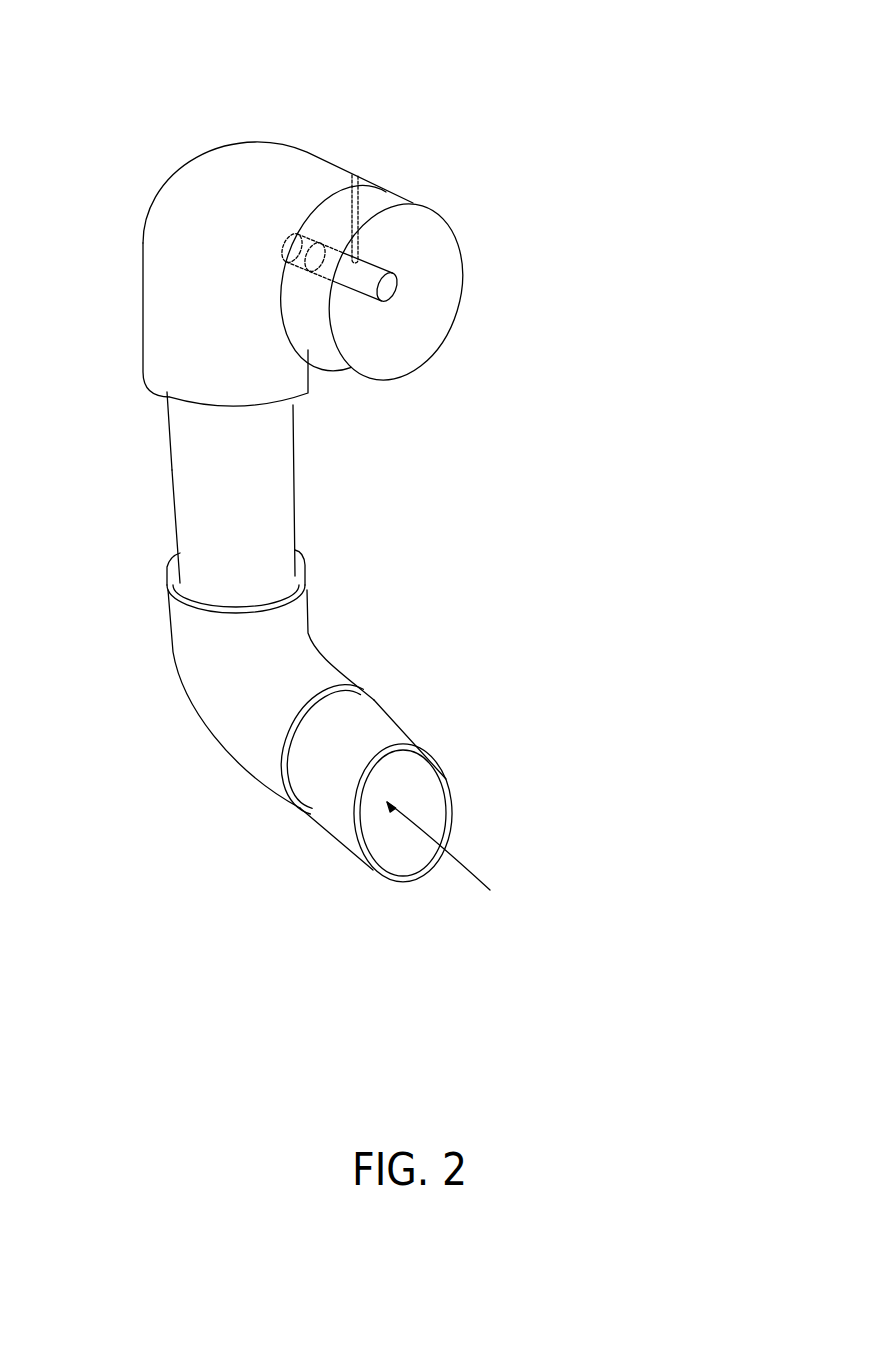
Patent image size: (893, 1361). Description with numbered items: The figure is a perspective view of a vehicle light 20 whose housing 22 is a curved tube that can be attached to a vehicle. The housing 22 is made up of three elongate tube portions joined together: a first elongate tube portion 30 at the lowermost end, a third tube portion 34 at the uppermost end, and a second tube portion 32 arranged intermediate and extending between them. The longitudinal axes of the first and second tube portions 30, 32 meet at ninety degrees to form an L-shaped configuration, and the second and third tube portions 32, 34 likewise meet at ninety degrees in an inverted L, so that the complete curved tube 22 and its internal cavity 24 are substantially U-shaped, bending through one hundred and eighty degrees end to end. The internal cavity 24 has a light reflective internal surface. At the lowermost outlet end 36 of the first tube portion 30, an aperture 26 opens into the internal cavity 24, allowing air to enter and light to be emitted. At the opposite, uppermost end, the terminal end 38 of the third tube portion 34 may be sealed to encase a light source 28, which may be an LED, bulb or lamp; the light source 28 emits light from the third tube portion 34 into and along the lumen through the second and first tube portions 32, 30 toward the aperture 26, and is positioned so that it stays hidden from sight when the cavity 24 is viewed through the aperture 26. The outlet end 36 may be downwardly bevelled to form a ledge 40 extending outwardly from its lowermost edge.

The vehicle light 20 is at (473, 83).
The housing 22 is at (225, 480).
The internal cavity 24 is at (449, 862).
The aperture 26 is at (418, 810).
The light source 28 is at (368, 267).
The first elongate tube portion 30 is at (388, 724).
The second elongate tube portion 32 is at (172, 430).
The third elongate tube portion 34 is at (345, 175).
The outlet end 36 is at (440, 778).
The terminal end 38 is at (422, 290).
The ledge 40 is at (410, 883).